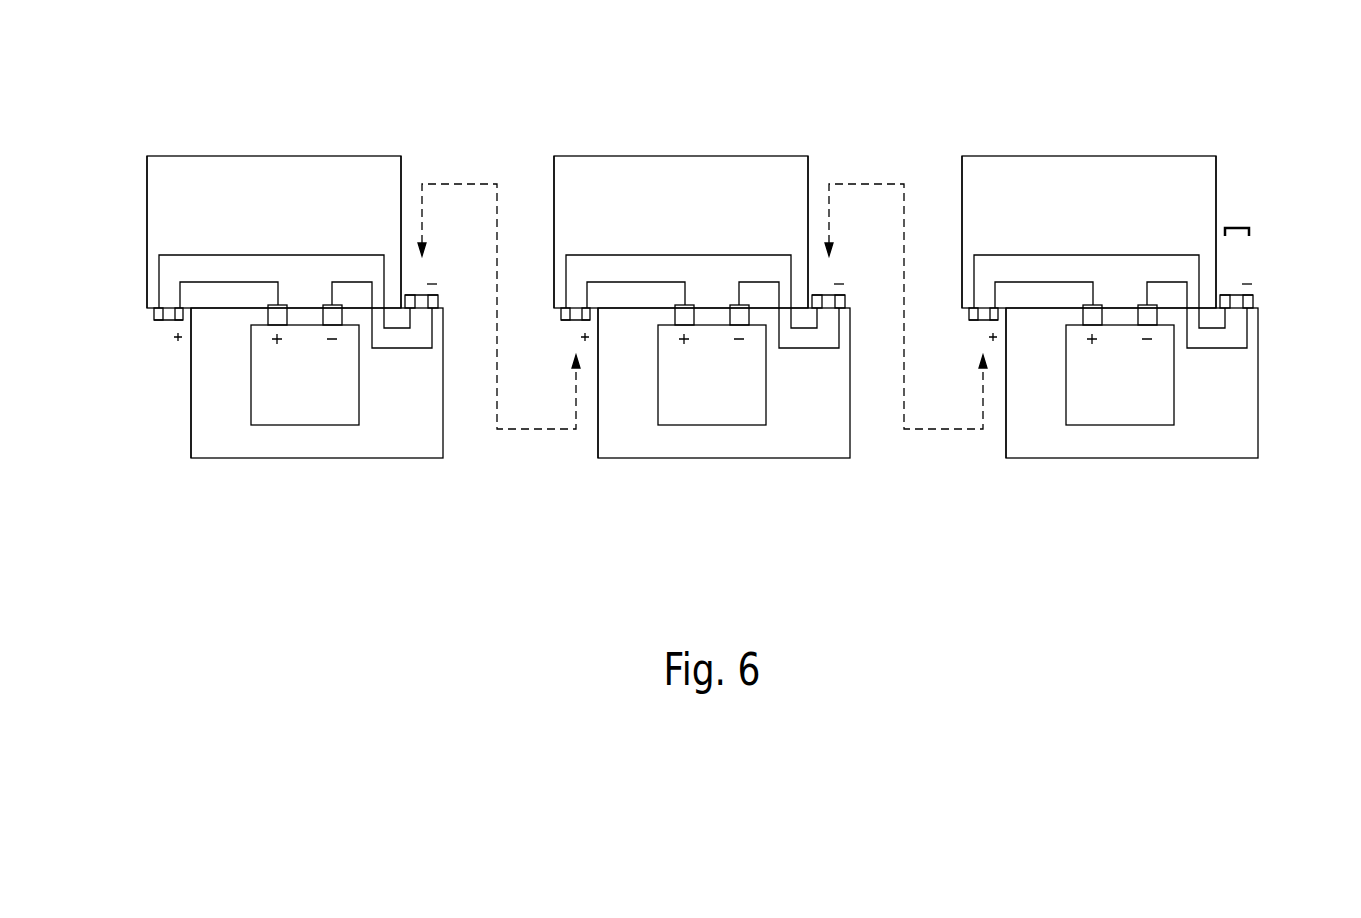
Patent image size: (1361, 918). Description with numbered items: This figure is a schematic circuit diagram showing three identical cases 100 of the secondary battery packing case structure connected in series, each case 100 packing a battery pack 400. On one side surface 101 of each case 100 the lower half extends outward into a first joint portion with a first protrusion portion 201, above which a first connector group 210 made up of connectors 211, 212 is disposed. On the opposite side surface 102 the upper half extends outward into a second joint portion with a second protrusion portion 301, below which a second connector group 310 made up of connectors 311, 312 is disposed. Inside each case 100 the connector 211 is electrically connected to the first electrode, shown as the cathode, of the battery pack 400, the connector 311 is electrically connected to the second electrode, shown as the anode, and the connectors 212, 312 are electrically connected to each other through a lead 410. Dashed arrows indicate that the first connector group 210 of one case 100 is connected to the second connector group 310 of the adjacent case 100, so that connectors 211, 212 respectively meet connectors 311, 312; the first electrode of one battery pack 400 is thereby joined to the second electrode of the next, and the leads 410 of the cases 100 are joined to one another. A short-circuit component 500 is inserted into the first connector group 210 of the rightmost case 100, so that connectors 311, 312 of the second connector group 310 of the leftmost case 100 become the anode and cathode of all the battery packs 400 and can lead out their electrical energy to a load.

The case 100 is at (272, 138).
The side surface 101 is at (400, 173).
The side surface 102 is at (192, 420).
The first protrusion portion 201 is at (432, 425).
The first connector group 210 is at (487, 300).
The connector 211 is at (437, 302).
The connector 212 is at (408, 295).
The second protrusion portion 301 is at (157, 190).
The second connector group 310 is at (90, 329).
The connector 311 is at (176, 318).
The connector 312 is at (156, 310).
The battery pack 400 is at (298, 413).
The lead 410 is at (262, 254).
The short-circuit component 500 is at (1237, 227).